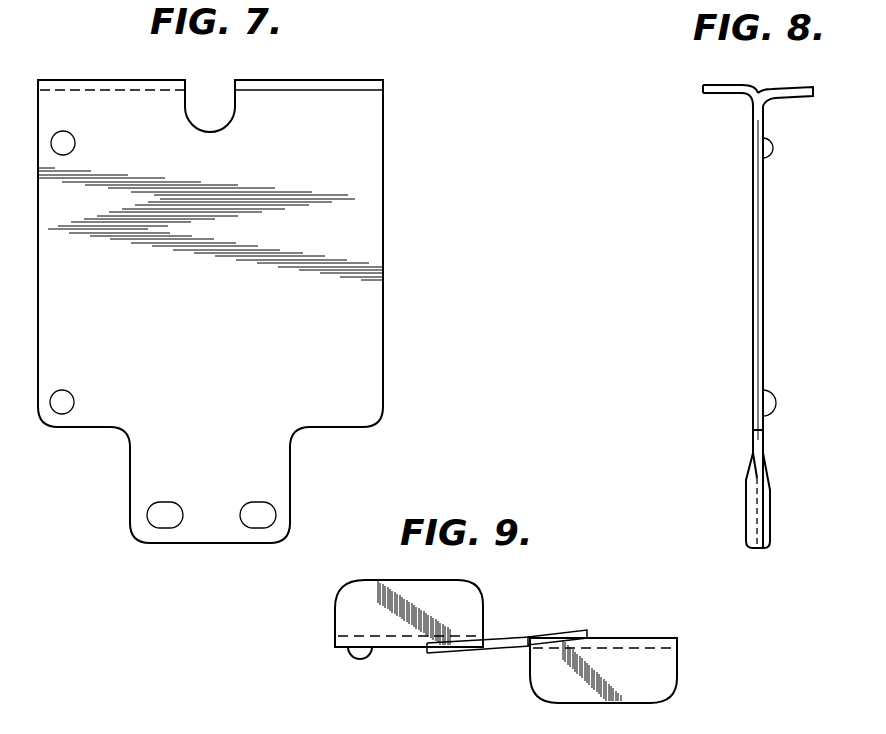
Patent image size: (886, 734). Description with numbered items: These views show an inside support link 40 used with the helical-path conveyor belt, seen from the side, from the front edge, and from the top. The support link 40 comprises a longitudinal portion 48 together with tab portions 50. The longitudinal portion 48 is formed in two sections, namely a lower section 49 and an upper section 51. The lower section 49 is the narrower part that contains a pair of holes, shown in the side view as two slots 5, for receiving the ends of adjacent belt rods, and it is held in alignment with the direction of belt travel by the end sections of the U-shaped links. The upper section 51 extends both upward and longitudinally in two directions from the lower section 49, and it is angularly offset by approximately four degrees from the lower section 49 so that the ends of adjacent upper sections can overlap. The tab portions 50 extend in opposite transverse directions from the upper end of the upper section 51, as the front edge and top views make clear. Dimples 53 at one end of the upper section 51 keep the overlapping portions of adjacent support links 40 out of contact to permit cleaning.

In FIG. 7, the support link 40 is at (416, 125).
In FIG. 8, the support link 40 is at (715, 138).
In FIG. 9, the support link 40 is at (613, 599).
In FIG. 7, the longitudinal portion 48 is at (394, 194).
In FIG. 8, the longitudinal portion 48 is at (740, 268).
In FIG. 7, the lower section 49 is at (198, 487).
In FIG. 8, the lower section 49 is at (771, 504).
In FIG. 9, the lower section 49 is at (568, 631).
In FIG. 7, the tab portions 50 is at (70, 70).
In FIG. 8, the tab portions 50 is at (695, 78).
In FIG. 9, the tab portions 50 is at (350, 620).
In FIG. 7, the upper section 51 is at (189, 324).
In FIG. 8, the upper section 51 is at (759, 298).
In FIG. 9, the upper section 51 is at (505, 647).
In FIG. 7, the dimples 53 is at (70, 146).
In FIG. 8, the dimples 53 is at (774, 150).
In FIG. 7, the slot 5 is at (172, 518).